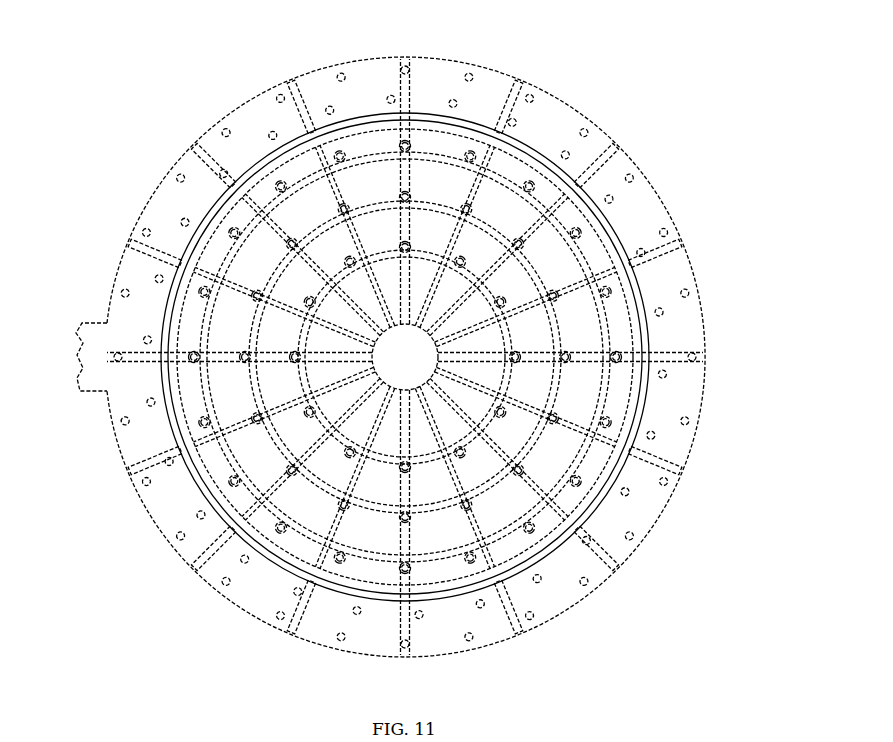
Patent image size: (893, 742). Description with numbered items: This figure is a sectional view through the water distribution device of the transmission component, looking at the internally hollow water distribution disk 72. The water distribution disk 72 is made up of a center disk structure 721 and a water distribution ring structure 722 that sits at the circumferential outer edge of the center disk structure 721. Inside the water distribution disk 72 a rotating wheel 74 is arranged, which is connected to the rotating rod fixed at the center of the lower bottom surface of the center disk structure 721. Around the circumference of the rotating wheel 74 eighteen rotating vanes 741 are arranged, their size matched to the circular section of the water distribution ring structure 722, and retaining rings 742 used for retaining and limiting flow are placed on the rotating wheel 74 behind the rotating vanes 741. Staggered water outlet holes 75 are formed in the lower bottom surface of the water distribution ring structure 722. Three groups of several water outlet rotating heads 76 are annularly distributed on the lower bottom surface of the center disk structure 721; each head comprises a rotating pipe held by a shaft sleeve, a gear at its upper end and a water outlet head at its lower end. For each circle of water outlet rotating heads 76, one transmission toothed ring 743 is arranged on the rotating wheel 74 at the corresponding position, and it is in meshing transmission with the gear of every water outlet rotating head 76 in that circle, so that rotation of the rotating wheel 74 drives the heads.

The water distribution disk 72 is at (560, 98).
The center disk structure 721 is at (553, 462).
The water distribution ring structure 722 is at (685, 323).
The rotating wheel 74 is at (203, 447).
The rotating vanes 741 is at (130, 242).
The retaining rings 742 is at (167, 389).
The transmission toothed ring 743 is at (370, 207).
The water outlet holes 75 is at (662, 232).
The water outlet rotating heads 76 is at (200, 295).